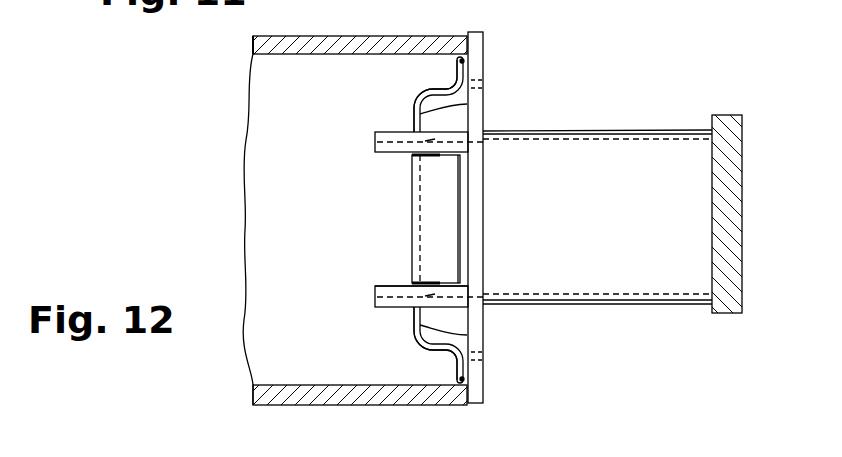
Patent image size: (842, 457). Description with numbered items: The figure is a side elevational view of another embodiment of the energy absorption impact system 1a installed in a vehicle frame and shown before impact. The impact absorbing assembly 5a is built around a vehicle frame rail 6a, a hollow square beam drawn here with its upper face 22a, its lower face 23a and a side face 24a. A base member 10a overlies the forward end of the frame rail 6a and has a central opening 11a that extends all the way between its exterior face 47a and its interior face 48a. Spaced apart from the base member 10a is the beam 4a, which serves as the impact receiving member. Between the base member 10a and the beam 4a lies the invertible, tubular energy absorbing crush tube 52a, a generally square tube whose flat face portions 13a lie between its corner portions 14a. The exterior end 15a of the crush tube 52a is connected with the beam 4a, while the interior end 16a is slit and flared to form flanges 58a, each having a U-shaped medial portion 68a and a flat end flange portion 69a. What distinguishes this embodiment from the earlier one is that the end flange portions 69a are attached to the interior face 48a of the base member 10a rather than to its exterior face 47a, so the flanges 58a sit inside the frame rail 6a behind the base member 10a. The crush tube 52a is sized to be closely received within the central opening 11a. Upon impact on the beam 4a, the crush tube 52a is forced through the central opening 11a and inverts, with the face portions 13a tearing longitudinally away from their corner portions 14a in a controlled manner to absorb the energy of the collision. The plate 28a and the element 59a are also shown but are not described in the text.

The energy absorption impact system 1a is at (230, 104).
The beam 4a is at (736, 200).
The impact absorbing assembly 5a is at (249, 373).
The vehicle frame rail 6a is at (251, 40).
The base member 10a is at (484, 327).
The central opening 11a is at (485, 372).
The face portion 13a is at (620, 245).
The corner portion 14a is at (692, 128).
The exterior end 15a is at (716, 306).
The interior end 16a is at (376, 286).
The upper face 22a is at (356, 35).
The lower face 23a is at (375, 406).
The side face 24a is at (258, 190).
The mounting plate 28a is at (482, 32).
The exterior face 47a is at (483, 101).
The interior face 48a is at (417, 114).
The crush tube 52a is at (627, 128).
The flange 58a is at (425, 226).
The nut 59a is at (376, 133).
The U-shaped medial portion 68a is at (418, 328).
The end flange portion 69a is at (455, 62).